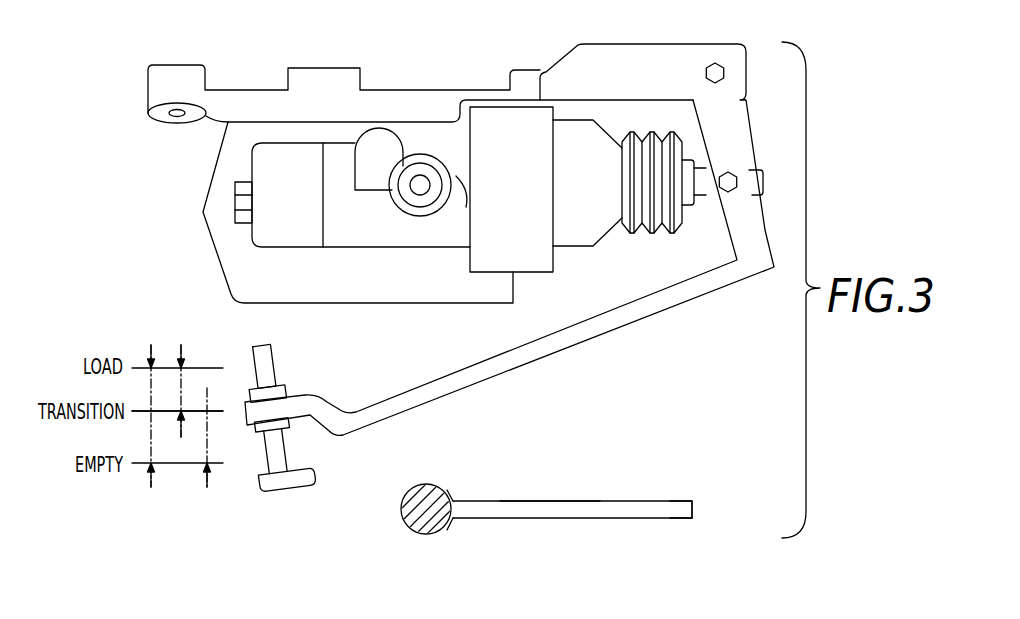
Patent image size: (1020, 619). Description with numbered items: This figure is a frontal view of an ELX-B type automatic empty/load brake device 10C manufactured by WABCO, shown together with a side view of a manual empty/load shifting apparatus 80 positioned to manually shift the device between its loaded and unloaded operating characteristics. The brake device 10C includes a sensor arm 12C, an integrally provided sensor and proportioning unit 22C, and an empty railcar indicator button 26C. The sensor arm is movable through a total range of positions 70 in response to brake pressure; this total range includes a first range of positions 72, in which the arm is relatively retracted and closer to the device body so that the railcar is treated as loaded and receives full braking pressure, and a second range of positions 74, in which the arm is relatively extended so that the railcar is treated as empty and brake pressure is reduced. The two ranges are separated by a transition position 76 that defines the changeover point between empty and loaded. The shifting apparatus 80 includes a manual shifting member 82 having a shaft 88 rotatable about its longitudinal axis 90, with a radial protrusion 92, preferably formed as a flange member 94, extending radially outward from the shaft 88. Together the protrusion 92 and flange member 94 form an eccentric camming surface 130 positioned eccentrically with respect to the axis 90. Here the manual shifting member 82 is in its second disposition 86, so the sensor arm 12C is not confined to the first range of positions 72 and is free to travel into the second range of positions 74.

The ELX-B type automatic empty/load brake device 10C is at (136, 153).
The sensor and proportioning unit 22C is at (200, 254).
The empty railcar indicator button 26C is at (419, 182).
The sensor arm 12C is at (606, 333).
The first range of positions 72 is at (182, 353).
The transition position 76 is at (140, 412).
The total range of positions 70 is at (150, 484).
The second range of positions 74 is at (207, 487).
The shaft 88 is at (401, 508).
The longitudinal axis 90 is at (425, 510).
The manual empty/load shifting apparatus 80 is at (415, 549).
The radial protrusion 92 is at (619, 476).
The flange member 94 is at (540, 500).
The manual shifting member 82 is at (697, 478).
The eccentric camming surface 130 is at (710, 500).
The second disposition 86 is at (708, 528).